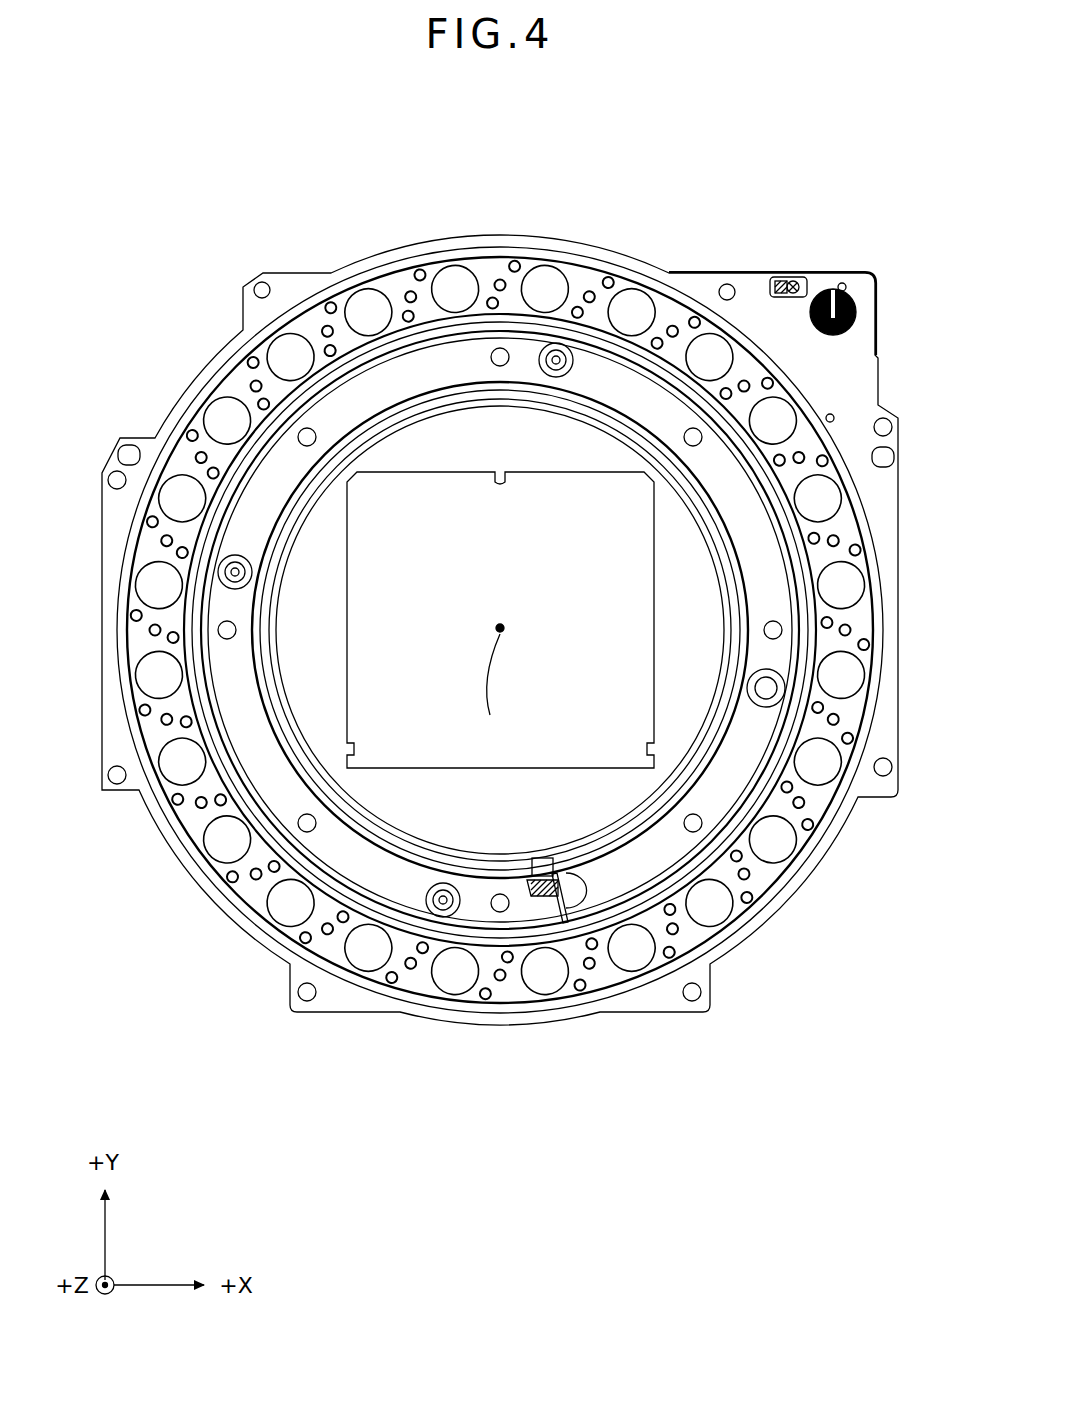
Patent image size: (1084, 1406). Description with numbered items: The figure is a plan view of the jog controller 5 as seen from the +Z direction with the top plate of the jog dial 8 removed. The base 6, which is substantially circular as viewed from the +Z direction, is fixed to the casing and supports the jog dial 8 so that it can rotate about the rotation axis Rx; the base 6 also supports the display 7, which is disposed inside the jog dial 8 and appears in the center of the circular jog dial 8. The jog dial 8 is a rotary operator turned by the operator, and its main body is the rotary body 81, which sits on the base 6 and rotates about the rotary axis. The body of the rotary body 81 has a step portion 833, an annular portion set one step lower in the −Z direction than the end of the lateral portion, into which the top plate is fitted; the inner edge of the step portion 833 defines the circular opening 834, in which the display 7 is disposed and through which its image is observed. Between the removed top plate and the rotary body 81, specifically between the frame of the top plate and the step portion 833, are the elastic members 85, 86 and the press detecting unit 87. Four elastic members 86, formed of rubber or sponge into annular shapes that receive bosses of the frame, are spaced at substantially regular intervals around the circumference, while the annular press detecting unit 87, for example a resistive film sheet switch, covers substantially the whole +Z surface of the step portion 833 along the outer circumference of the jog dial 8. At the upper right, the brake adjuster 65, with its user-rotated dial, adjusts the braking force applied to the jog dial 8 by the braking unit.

The jog controller 5 is at (818, 132).
The base 6 is at (881, 346).
The brake adjuster 65 is at (850, 300).
The display 7 is at (697, 545).
The jog dial 8 is at (553, 257).
The rotary body 81 is at (688, 938).
The step portion 833 is at (648, 388).
The opening 834 is at (410, 396).
The elastic members 85 is at (497, 345).
The elastic members 86 is at (566, 348).
The press detecting unit 87 is at (729, 781).